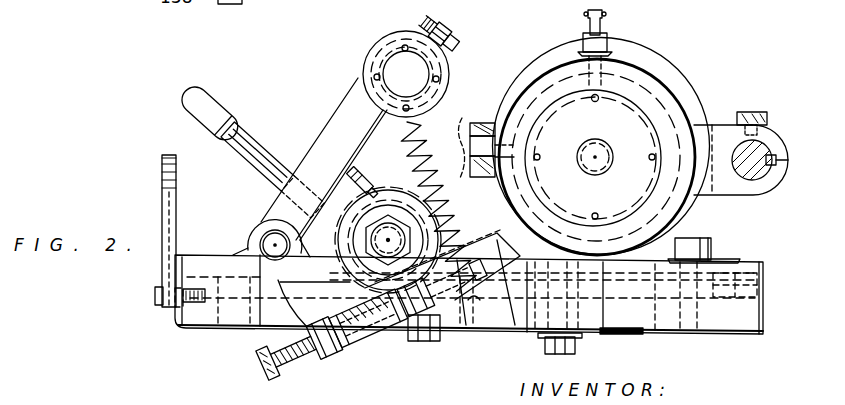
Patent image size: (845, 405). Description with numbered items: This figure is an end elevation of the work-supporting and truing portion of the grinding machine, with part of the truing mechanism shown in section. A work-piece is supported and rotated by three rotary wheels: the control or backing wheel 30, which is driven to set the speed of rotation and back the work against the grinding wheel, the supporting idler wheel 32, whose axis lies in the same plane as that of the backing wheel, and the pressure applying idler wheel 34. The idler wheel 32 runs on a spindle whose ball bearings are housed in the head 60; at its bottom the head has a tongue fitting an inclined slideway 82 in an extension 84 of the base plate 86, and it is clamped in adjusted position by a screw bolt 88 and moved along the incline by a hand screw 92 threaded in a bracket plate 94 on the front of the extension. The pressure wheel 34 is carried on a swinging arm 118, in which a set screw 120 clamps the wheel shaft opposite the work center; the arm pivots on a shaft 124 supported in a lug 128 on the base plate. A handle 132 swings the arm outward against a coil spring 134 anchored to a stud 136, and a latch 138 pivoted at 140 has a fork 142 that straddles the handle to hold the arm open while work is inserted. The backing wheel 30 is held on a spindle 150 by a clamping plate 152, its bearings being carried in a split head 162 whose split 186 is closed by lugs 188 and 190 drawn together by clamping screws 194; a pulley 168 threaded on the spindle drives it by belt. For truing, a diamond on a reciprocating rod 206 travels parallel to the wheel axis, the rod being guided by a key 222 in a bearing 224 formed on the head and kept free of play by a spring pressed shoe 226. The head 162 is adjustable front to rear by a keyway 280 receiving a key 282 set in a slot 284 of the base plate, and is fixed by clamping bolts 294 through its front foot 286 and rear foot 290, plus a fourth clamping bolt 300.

The control or backing wheel 30 is at (525, 85).
The supporting idler wheel 32 is at (326, 244).
The pressure applying idler wheel 34 is at (365, 60).
The head or housing 60 is at (365, 297).
The inclined slideway 82 is at (436, 308).
The extension 84 is at (378, 341).
The base plate 86 is at (497, 330).
The screw bolt 88 is at (428, 342).
The hand screw 92 is at (295, 366).
The bracket plate 94 is at (324, 359).
The swinging arm or bracket 118 is at (328, 126).
The set screw 120 is at (432, 24).
The shaft 124 is at (262, 240).
The lug 128 is at (274, 220).
The handle 132 is at (182, 110).
The coil spring 134 is at (422, 170).
The stud 136 is at (480, 303).
The latch 138 is at (162, 197).
The pivot 140 is at (155, 296).
The lateral notch or fork 142 is at (162, 172).
The spindle 150 is at (578, 152).
The clamping plate 152 is at (593, 158).
The head or housing 162 is at (548, 60).
The pulley 168 is at (640, 46).
The split 186 is at (470, 148).
The upper lug 188 is at (470, 130).
The lower lug 190 is at (470, 165).
The clamping screws 194 is at (485, 95).
The reciprocating rod 206 is at (742, 182).
The key 222 is at (770, 150).
The bearing 224 is at (735, 178).
The spring pressed shoe 226 is at (748, 125).
The keyway 280 is at (710, 290).
The key 282 is at (714, 295).
The slot 284 is at (653, 297).
The front foot or extension 286 is at (497, 233).
The rear foot or extension 290 is at (740, 261).
The clamping bolts 294 is at (711, 248).
The fourth clamping bolt 300 is at (560, 354).